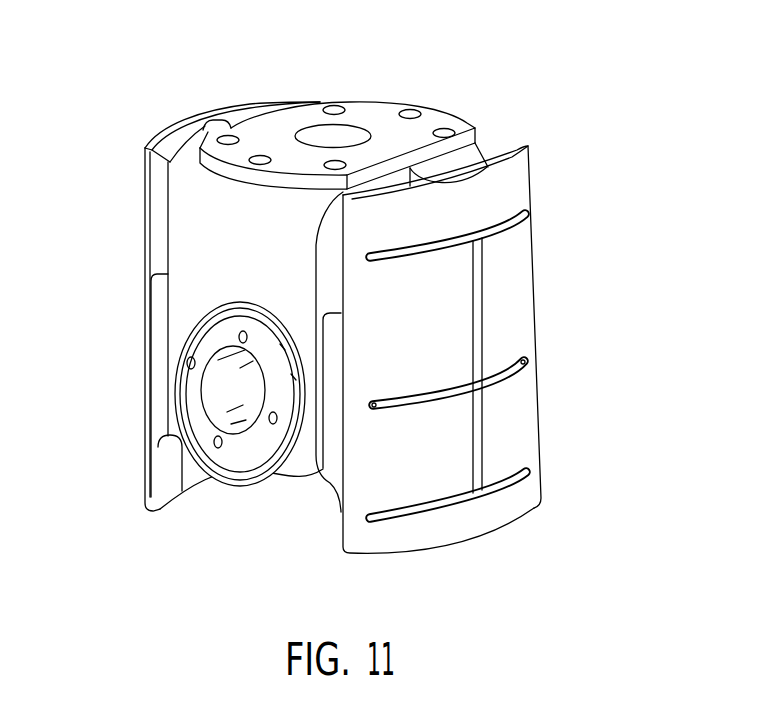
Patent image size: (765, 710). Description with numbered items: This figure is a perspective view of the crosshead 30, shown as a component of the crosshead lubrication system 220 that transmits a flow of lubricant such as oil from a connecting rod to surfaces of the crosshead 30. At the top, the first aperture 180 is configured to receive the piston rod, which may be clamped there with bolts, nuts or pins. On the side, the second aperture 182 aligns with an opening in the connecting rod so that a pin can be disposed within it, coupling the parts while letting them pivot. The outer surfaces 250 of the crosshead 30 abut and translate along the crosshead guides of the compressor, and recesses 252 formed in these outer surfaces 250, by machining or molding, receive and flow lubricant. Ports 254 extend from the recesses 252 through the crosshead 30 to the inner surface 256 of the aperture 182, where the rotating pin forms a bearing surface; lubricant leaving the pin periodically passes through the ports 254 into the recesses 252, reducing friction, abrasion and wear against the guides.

The crosshead 30 is at (103, 127).
The first aperture 180 is at (336, 137).
The second aperture 182 is at (245, 406).
The crosshead lubrication system 220 is at (582, 99).
The outer surfaces 250 is at (134, 243).
The recesses 252 is at (477, 357).
The ports 254 is at (526, 361).
The inner surface 256 is at (219, 350).